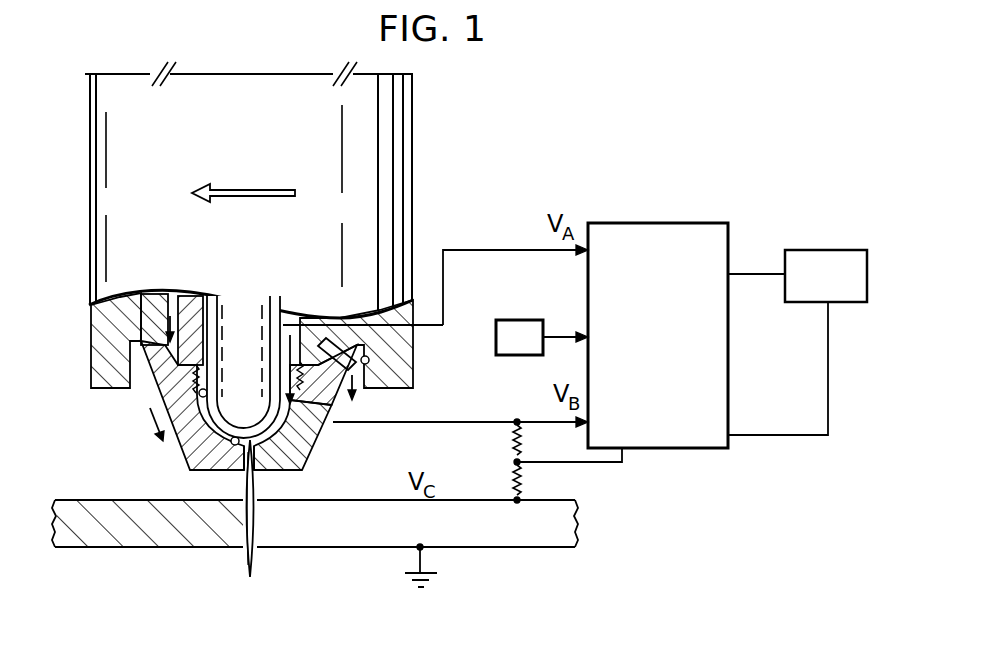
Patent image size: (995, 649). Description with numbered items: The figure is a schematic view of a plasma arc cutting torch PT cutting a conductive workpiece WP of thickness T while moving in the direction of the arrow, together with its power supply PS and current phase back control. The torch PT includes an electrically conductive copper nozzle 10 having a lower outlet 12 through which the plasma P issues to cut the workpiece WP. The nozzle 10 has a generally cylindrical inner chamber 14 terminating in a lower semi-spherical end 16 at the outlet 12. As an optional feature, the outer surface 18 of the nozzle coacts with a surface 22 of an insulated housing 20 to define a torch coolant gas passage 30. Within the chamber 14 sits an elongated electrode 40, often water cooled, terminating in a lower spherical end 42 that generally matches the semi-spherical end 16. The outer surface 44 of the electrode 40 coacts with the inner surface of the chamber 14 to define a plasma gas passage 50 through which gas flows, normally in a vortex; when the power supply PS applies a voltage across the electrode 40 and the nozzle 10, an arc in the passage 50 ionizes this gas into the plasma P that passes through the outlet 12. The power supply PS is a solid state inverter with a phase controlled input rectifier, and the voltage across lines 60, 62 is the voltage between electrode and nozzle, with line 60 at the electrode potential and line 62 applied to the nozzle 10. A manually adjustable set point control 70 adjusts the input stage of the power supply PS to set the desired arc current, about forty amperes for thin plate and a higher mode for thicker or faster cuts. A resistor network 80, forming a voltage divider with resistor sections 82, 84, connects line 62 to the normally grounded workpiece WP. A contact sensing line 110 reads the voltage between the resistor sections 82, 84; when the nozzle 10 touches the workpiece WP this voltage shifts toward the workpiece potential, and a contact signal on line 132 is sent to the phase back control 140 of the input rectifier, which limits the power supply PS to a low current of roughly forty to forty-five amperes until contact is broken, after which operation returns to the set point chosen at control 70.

The nozzle 10 is at (250, 421).
The lower outlet 12 is at (245, 474).
The inner chamber 14 is at (160, 390).
The lower semi-spherical end 16 is at (188, 468).
The outer surface 18 is at (186, 459).
The insulated housing 20 is at (88, 346).
The surface 22 is at (367, 345).
The torch coolant gas passage 30 is at (363, 382).
The electrode 40 is at (247, 301).
The lower spherical end 42 is at (295, 471).
The outer surface 44 is at (189, 300).
The plasma gas passage 50 is at (287, 420).
The line 60 is at (475, 249).
The line 62 is at (440, 421).
The set point control 70 is at (495, 334).
The resistor network 80 is at (520, 461).
The resistor section 82 is at (522, 439).
The resistor section 84 is at (522, 479).
The contact sensing line 110 is at (612, 464).
The signal line 132 is at (828, 418).
The phase back control 140 is at (825, 250).
The plasma arc cutting torch PT is at (82, 169).
The power supply PS is at (734, 352).
The workpiece WP is at (147, 541).
The plasma P is at (256, 525).
The thickness T is at (65, 551).